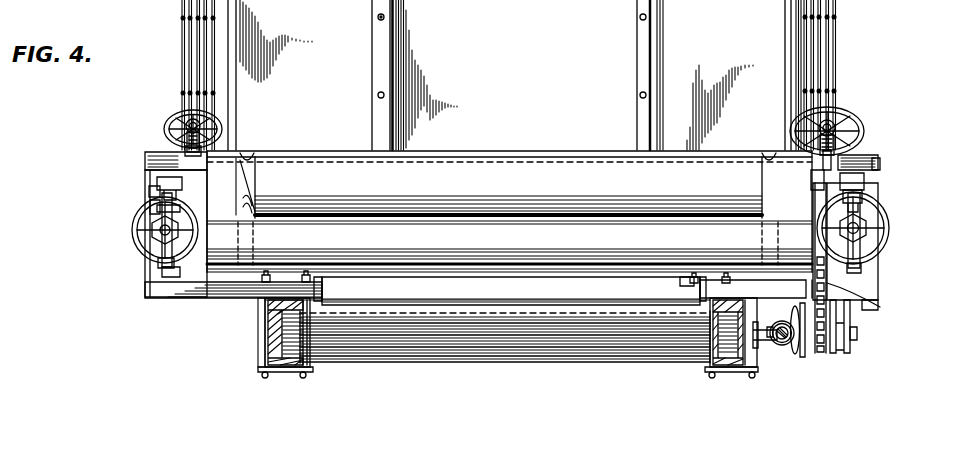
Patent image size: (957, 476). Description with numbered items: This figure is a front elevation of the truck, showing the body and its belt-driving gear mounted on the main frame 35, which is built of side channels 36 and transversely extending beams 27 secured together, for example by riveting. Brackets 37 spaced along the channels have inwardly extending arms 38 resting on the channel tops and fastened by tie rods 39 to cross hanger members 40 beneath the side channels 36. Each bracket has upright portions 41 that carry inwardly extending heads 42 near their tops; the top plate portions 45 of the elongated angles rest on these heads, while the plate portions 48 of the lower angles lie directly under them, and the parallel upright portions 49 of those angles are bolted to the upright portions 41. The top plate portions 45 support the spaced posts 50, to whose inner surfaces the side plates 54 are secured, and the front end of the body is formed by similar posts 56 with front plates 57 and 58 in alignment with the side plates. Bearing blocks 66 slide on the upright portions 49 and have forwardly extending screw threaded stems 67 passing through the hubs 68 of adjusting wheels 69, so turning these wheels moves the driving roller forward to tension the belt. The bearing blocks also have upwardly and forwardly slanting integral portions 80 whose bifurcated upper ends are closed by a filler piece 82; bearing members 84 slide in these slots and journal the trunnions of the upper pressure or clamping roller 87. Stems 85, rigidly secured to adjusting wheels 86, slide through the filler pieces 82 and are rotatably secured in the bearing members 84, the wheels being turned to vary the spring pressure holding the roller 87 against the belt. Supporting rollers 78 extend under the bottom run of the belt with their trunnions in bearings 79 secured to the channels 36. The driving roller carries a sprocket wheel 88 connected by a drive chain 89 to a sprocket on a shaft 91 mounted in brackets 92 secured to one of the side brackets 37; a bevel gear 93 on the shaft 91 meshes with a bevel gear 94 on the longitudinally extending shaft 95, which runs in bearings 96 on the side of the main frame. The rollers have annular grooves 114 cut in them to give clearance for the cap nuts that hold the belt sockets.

The transversely extending beams 27 is at (501, 345).
The main frame 35 is at (487, 341).
The side channels 36 is at (268, 334).
The brackets 37 is at (152, 276).
The inwardly extending arms 38 is at (182, 298).
The tie rods 39 is at (266, 311).
The cross hanger members 40 is at (262, 368).
The upright portions 41 is at (157, 179).
The inwardly extending heads 42 is at (880, 164).
The top plate portions 45 is at (150, 155).
The plate portions 48 is at (149, 190).
The upright portions 49 is at (164, 202).
The posts 50 is at (194, 42).
The side plates 54 is at (234, 4).
The posts 56 is at (382, 126).
The front plate 57 is at (496, 75).
The front plate 58 is at (469, 164).
The bearing blocks 66 is at (182, 273).
The screw threaded stems 67 is at (156, 246).
The hubs 68 is at (160, 234).
The adjusting wheels 69 is at (132, 231).
The supporting rollers 78 is at (511, 291).
The bearings 79 is at (690, 286).
The slanting integral portions 80 is at (862, 188).
The filler piece 82 is at (174, 140).
The bearing members 84 is at (812, 181).
The stems 85 is at (840, 134).
The adjusting wheels 86 is at (165, 125).
The pressure or clamping roller 87 is at (509, 211).
The sprocket wheel 88 is at (811, 213).
The drive chain 89 is at (863, 299).
The shaft 91 is at (855, 336).
The brackets 92 is at (850, 327).
The bevel gear 93 is at (805, 348).
The bevel gear 94 is at (786, 345).
The longitudinally extending shaft 95 is at (781, 340).
The bearings 96 is at (777, 322).
The annular grooves 114 is at (245, 183).